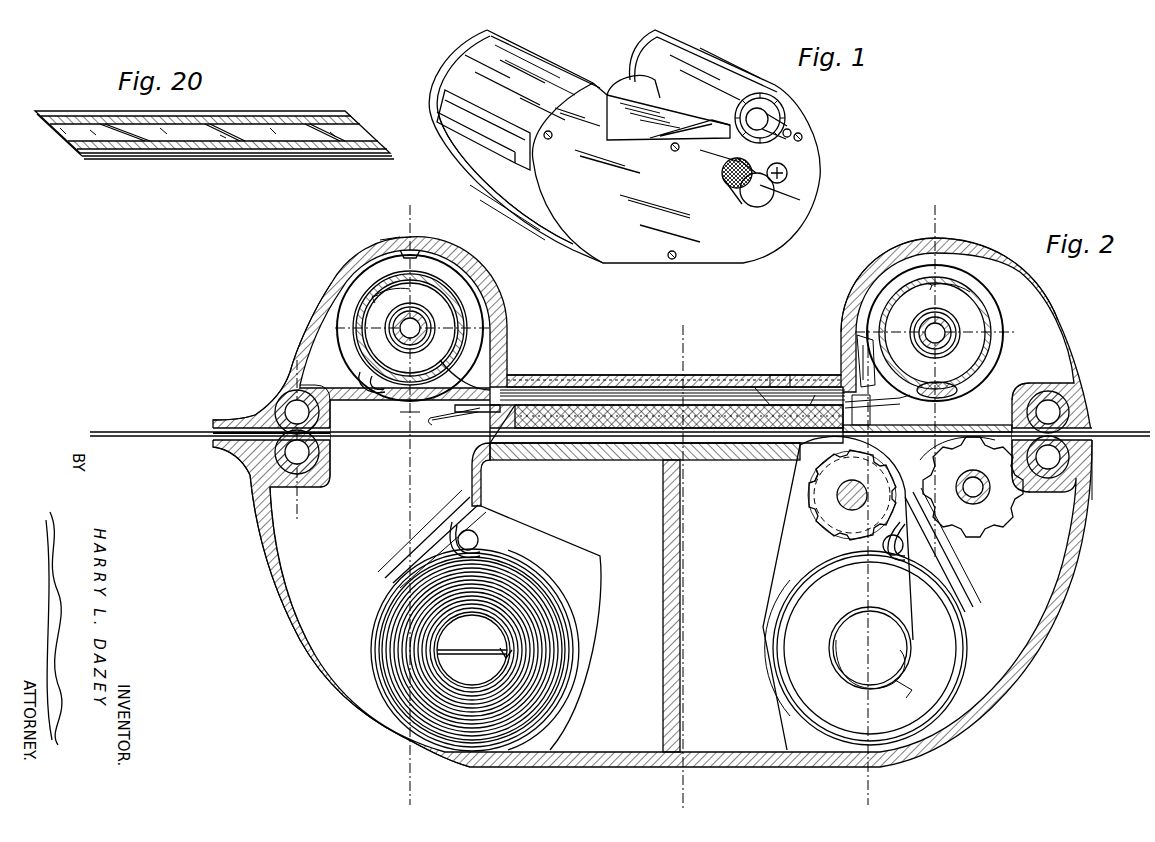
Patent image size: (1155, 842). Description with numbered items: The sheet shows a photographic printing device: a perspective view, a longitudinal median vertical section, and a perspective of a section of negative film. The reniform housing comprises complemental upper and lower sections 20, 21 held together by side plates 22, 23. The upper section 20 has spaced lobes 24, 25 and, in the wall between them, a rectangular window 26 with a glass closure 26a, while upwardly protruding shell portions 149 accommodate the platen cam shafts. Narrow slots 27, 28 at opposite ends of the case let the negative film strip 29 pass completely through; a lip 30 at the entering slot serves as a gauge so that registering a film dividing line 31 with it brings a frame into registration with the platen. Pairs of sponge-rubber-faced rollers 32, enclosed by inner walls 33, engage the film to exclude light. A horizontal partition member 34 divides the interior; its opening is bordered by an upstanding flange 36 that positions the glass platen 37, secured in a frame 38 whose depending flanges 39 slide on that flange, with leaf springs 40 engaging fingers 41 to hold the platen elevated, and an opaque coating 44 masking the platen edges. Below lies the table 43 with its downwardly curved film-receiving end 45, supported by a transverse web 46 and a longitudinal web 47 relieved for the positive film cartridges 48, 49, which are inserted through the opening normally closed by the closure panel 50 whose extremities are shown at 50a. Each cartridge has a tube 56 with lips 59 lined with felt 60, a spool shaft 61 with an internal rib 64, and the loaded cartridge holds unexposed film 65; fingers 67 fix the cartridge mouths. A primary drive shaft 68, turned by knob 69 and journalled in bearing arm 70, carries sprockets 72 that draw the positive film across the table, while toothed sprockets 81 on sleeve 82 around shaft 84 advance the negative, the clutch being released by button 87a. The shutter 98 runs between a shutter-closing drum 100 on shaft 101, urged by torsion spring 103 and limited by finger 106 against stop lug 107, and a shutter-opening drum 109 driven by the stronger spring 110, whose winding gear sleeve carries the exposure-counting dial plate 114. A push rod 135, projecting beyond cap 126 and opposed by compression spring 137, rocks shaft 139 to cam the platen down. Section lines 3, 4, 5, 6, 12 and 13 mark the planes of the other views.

In FIG. 1, the upper section 20 is at (458, 72).
In FIG. 2, the upper section 20 is at (322, 279).
In FIG. 1, the lower section 21 is at (507, 180).
In FIG. 2, the lower section 21 is at (318, 669).
In FIG. 1, the side plate 22 is at (655, 208).
In FIG. 2, the side plate 23 is at (300, 566).
In FIG. 1, the lobe 24 is at (535, 66).
In FIG. 2, the lobe 24 is at (490, 284).
In FIG. 1, the lobe 25 is at (707, 60).
In FIG. 2, the lobe 25 is at (865, 283).
In FIG. 1, the window 26 is at (625, 100).
In FIG. 2, the window 26 is at (530, 374).
In FIG. 1, the glass closure 26a is at (668, 118).
In FIG. 2, the glass closure 26a is at (626, 375).
In FIG. 1, the slot 27 is at (472, 143).
In FIG. 2, the slot 27 is at (240, 458).
In FIG. 2, the slot 28 is at (1094, 437).
In FIG. 20, the negative film strip 29 is at (212, 152).
In FIG. 2, the negative film strip 29 is at (136, 428).
In FIG. 1, the lip 30 is at (466, 132).
In FIG. 2, the lip 30 is at (212, 420).
In FIG. 20, the dividing lines 31 is at (230, 138).
In FIG. 2, the dividing lines 31 is at (212, 436).
In FIG. 2, the rollers 32 is at (282, 386).
In FIG. 2, the inner walls 33 is at (331, 394).
In FIG. 2, the partition member 34 is at (992, 424).
In FIG. 2, the upstanding flange 36 is at (505, 446).
In FIG. 2, the glass platen 37 is at (575, 418).
In FIG. 2, the frame 38 is at (850, 412).
In FIG. 2, the depending flanges 39 is at (472, 404).
In FIG. 2, the leaf springs 40 is at (455, 422).
In FIG. 2, the fingers 41 is at (462, 376).
In FIG. 2, the table 43 is at (640, 460).
In FIG. 2, the opaque coating 44 is at (522, 410).
In FIG. 2, the film-receiving end 45 is at (484, 505).
In FIG. 2, the transversely extending medial web 46 is at (665, 562).
In FIG. 2, the longitudinally extending medial web 47 is at (744, 612).
In FIG. 2, the positive film cartridge 48 is at (580, 629).
In FIG. 2, the positive film cartridge 49 is at (762, 656).
In FIG. 2, the closure panel 50 is at (448, 503).
In FIG. 2, the closure panel end extremities 50a is at (411, 556).
In FIG. 2, the tube 56 is at (552, 588).
In FIG. 2, the lips 59 is at (446, 542).
In FIG. 2, the felt strips 60 is at (443, 519).
In FIG. 2, the spool shaft 61 is at (440, 640).
In FIG. 2, the internal diametral rib 64 is at (456, 656).
In FIG. 2, the unexposed film 65 is at (623, 460).
In FIG. 2, the rods or fingers 67 is at (480, 538).
In FIG. 2, the primary drive shaft 68 is at (835, 496).
In FIG. 1, the manipulating knob 69 is at (757, 203).
In FIG. 2, the bearing arm 70 is at (808, 498).
In FIG. 2, the sprockets 72 is at (830, 530).
In FIG. 2, the toothed sprockets 81 is at (1002, 522).
In FIG. 2, the sleeve 82 is at (966, 479).
In FIG. 2, the shaft 84 is at (955, 489).
In FIG. 1, the button 87a is at (788, 173).
In FIG. 2, the shutter 98 is at (758, 398).
In FIG. 2, the shutter-closing drum 100 is at (340, 318).
In FIG. 2, the transverse shaft 101 is at (388, 333).
In FIG. 2, the torsion spring 103 is at (475, 320).
In FIG. 2, the finger 106 is at (380, 247).
In FIG. 2, the stop lug 107 is at (420, 252).
In FIG. 2, the shutter-opening drum 109 is at (982, 298).
In FIG. 2, the torsion spring 110 is at (946, 322).
In FIG. 1, the dial plate 114 is at (786, 110).
In FIG. 1, the cap 126 is at (788, 125).
In FIG. 1, the push rod 135 is at (796, 134).
In FIG. 2, the push rod 135 is at (952, 336).
In FIG. 2, the compression spring 137 is at (952, 336).
In FIG. 2, the shaft 139 is at (878, 383).
In FIG. 1, the shell portions 149 is at (698, 130).
In FIG. 2, the shell portions 149 is at (778, 374).
In FIG. 2, the section line 3— 3 is at (935, 211).
In FIG. 2, the section line 4— 4 is at (832, 319).
In FIG. 2, the section line 5— 5 is at (687, 343).
In FIG. 2, the section line 6— 6 is at (405, 210).
In FIG. 2, the section line 12— 12 is at (426, 402).
In FIG. 2, the section line 13— 13 is at (305, 370).